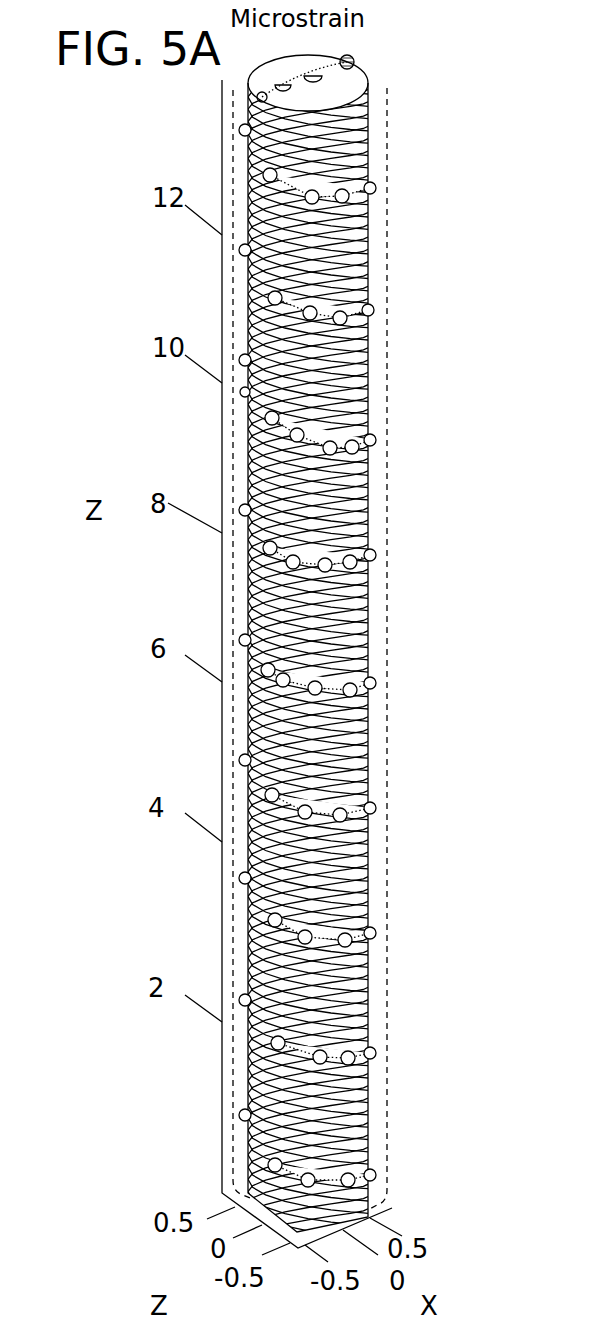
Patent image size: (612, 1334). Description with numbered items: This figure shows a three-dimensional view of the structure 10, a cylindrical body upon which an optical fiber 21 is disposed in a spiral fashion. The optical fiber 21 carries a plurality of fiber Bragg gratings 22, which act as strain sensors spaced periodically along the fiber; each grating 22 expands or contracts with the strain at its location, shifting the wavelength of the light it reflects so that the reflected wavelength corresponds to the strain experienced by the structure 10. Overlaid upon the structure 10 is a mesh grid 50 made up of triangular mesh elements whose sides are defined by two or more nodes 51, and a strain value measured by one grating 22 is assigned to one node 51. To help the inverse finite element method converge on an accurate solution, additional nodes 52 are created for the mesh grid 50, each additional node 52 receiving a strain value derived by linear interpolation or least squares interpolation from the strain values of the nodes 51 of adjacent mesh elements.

The structure 10 is at (386, 661).
The mesh grid 50 is at (382, 124).
The nodes 51 is at (344, 316).
The additional nodes 52 is at (372, 410).
The fiber Bragg gratings 22 is at (350, 1055).
The optical fiber 21 is at (300, 1172).